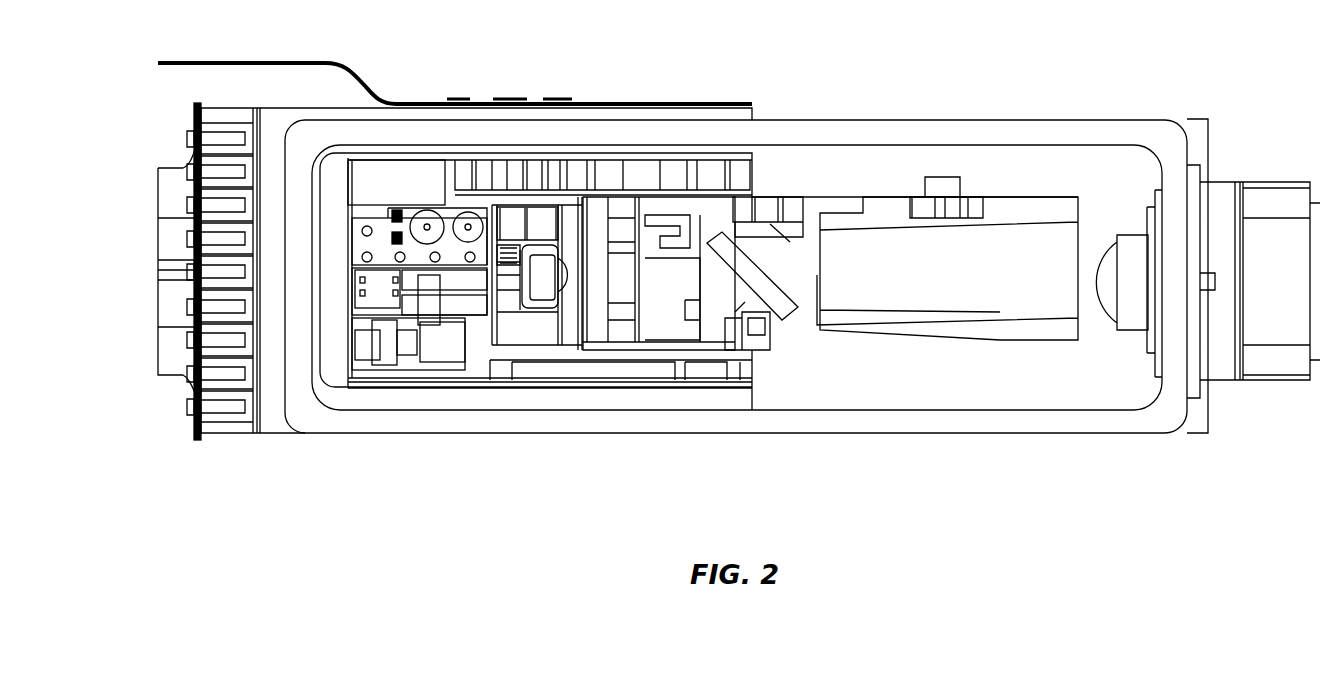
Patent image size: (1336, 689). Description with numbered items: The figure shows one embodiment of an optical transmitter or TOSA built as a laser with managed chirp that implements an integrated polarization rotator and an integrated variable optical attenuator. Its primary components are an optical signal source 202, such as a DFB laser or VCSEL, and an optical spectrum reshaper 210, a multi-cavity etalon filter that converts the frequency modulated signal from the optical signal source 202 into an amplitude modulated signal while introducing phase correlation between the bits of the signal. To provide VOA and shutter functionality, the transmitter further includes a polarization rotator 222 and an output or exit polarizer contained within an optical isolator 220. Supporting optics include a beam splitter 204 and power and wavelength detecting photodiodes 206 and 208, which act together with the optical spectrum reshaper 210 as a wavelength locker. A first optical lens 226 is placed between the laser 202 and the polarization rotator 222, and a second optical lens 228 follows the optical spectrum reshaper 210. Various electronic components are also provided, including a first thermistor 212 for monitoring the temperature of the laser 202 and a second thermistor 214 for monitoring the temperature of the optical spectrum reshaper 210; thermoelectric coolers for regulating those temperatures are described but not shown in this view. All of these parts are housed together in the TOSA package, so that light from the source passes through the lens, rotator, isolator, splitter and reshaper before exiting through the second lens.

The optical signal source 202 is at (505, 245).
The beam splitter 204 is at (783, 305).
The power and wavelength detecting photodiode 206 is at (775, 333).
The power and wavelength detecting photodiode 208 is at (770, 208).
The optical spectrum reshaper 210 is at (865, 213).
The first thermistor 212 is at (512, 225).
The second thermistor 214 is at (947, 268).
The optical isolator 220 is at (671, 277).
The polarization rotator 222 is at (659, 273).
The first optical lens 226 is at (540, 290).
The second optical lens 228 is at (1130, 243).